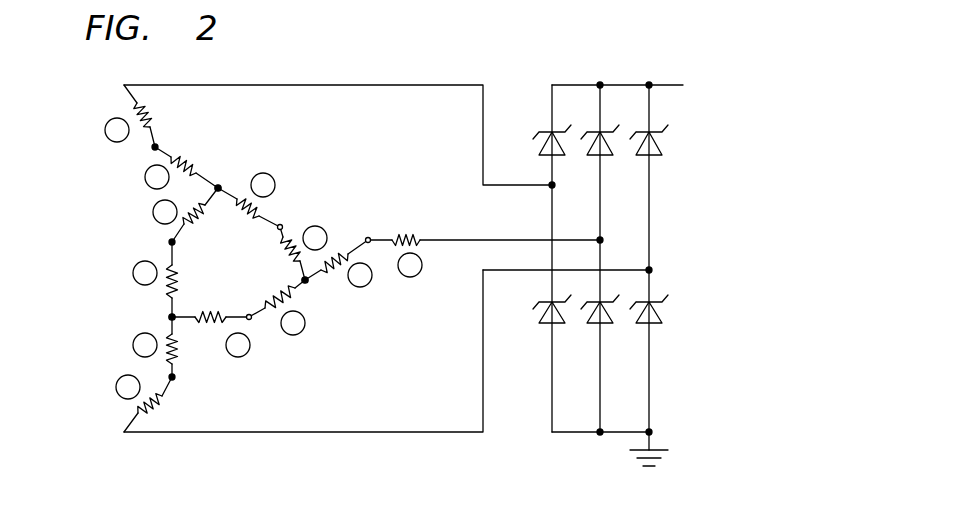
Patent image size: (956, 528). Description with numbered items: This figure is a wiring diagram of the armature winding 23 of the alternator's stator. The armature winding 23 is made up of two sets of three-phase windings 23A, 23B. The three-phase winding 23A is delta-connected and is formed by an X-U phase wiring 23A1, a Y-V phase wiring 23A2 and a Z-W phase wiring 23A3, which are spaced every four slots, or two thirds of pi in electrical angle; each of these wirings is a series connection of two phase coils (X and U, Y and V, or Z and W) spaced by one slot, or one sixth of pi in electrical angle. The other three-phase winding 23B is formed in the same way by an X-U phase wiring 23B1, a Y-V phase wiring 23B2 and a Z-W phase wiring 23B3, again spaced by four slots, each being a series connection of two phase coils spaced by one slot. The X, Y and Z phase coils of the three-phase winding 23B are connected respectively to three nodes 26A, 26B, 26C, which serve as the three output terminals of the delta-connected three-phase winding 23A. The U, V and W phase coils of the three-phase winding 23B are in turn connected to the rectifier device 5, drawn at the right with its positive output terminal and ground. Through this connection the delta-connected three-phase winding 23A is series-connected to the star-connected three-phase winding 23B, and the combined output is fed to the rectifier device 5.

The rectifier device 5 is at (607, 44).
The armature winding 23 is at (278, 110).
The three-phase winding 23A is at (327, 162).
The X-U phase wiring 23A1 is at (153, 215).
The Y-V phase wiring 23A2 is at (276, 187).
The Z-W phase wiring 23A3 is at (293, 335).
The three-phase winding 23B is at (182, 138).
The X-U phase wiring 23B1 is at (133, 345).
The Y-V phase wiring 23B2 is at (145, 178).
The Z-W phase wiring 23B3 is at (373, 280).
The node 26A is at (174, 319).
The node 26B is at (220, 187).
The node 26C is at (307, 282).